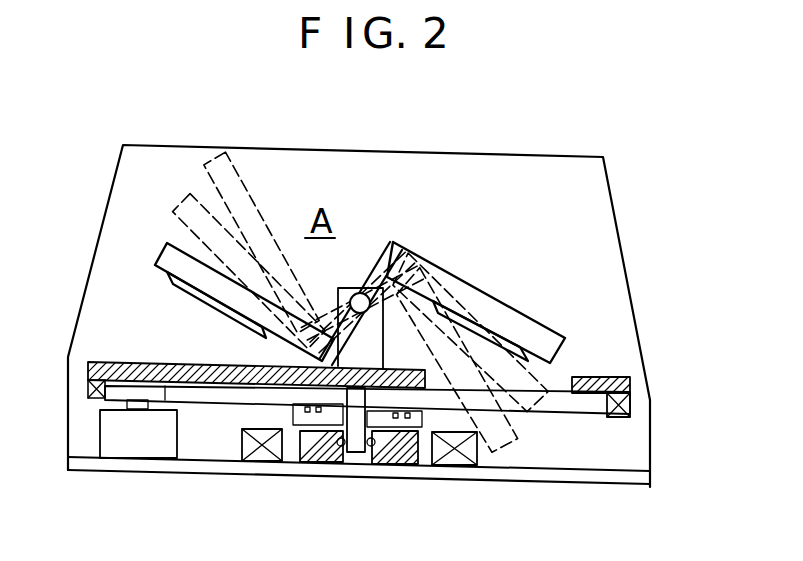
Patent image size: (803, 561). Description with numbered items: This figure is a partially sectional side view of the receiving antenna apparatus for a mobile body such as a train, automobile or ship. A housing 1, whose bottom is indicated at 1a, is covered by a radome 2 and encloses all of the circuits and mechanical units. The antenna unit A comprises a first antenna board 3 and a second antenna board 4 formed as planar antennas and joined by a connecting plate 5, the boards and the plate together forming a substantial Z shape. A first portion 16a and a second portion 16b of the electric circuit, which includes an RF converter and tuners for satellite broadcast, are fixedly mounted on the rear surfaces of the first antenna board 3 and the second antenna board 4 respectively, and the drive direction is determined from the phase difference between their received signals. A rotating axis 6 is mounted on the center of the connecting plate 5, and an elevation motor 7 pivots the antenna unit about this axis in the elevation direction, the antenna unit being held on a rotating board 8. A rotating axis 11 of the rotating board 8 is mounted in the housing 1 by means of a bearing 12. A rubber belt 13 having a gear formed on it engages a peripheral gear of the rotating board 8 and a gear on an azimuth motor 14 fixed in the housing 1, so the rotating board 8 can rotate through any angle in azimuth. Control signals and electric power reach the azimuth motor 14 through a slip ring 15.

The housing 1 is at (650, 463).
The bottom surface of base 1a is at (578, 488).
The radome 2 is at (577, 157).
The first antenna board 3 is at (157, 268).
The second antenna board 4 is at (483, 292).
The connecting plate 5 is at (377, 287).
The rotating axis 6 is at (353, 291).
The elevation motor 7 is at (386, 347).
The rotating board 8 is at (613, 377).
The rotating axis 11 is at (355, 467).
The bearing 12 is at (425, 468).
The rubber belt 13 is at (628, 407).
The azimuth motor 14 is at (100, 425).
The slip ring 15 is at (293, 412).
The first portion of antenna circuit 16a is at (207, 304).
The second portion of antenna circuit 16b is at (523, 343).